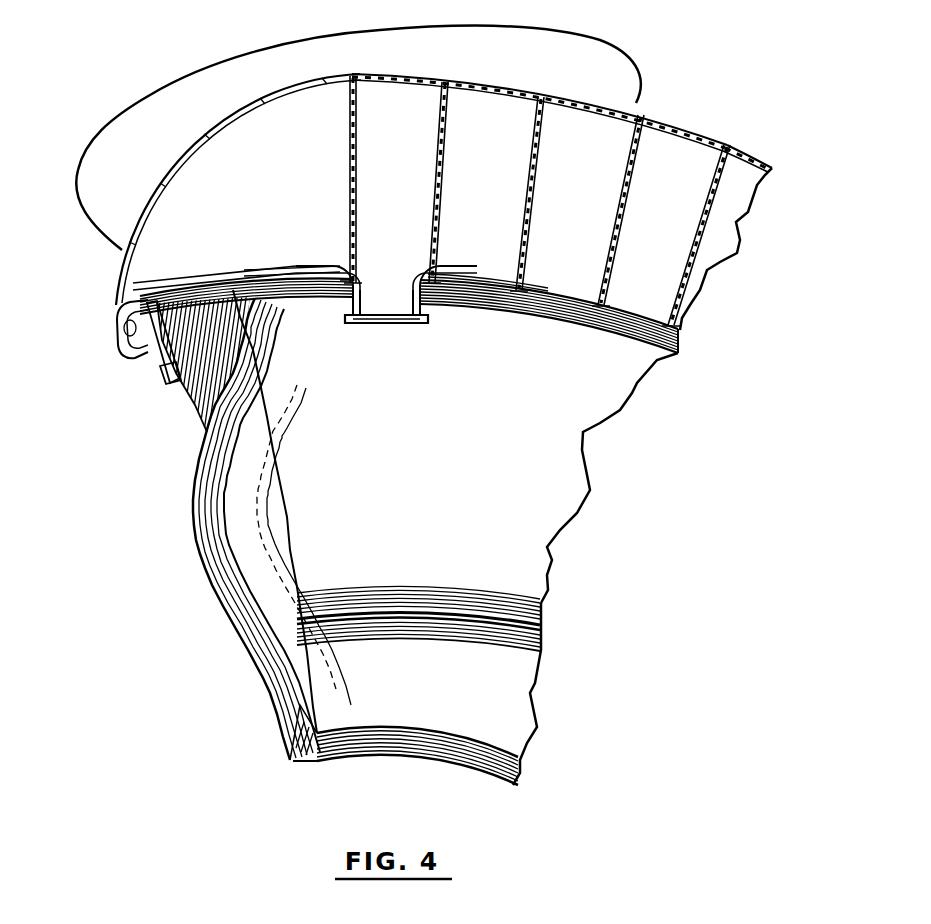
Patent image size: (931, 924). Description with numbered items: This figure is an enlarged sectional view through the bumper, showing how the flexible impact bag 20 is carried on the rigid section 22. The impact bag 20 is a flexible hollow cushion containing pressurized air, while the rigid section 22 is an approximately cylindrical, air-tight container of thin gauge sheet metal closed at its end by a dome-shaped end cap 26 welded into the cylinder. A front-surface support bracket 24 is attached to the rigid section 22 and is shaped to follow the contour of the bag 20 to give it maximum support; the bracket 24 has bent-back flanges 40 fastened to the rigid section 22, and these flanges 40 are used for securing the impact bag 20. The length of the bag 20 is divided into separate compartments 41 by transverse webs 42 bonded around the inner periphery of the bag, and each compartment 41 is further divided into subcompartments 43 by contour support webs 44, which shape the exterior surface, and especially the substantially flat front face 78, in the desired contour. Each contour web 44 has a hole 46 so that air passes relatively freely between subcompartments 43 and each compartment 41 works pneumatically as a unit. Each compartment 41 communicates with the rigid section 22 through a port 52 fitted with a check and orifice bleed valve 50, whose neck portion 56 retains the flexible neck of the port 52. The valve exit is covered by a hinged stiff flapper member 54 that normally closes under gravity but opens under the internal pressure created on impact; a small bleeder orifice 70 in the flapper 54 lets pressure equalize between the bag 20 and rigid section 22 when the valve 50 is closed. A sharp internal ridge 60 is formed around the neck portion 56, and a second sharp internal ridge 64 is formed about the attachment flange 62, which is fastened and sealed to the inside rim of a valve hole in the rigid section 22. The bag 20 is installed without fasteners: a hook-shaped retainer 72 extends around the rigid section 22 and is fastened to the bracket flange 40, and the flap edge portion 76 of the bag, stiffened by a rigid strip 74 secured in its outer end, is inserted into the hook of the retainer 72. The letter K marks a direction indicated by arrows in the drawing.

The impact bag 20 is at (210, 165).
The rigid section 22 is at (680, 340).
The front-surface support bracket 24 is at (250, 270).
The dome-shaped end cap 26 is at (197, 540).
The bent-back flange 40 is at (180, 378).
The compartment 41 is at (425, 26).
The transverse web 42 is at (626, 136).
The subcompartment 43 is at (558, 100).
The contour support web 44 is at (349, 126).
The hole 46 is at (350, 191).
The check and orifice bleed valve 50 is at (352, 312).
The port 52 is at (360, 283).
The flapper member 54 is at (364, 325).
The neck portion 56 is at (427, 312).
The sharp internal ridge 60 is at (368, 305).
The attachment flange 62 is at (492, 305).
The second sharp internal ridge 64 is at (345, 277).
The bleeder orifice 70 is at (400, 325).
The hook-shaped retainer 72 is at (165, 378).
The rigid strip 74 is at (152, 355).
The flap edge portion 76 is at (128, 347).
The flat front face 78 is at (582, 96).
The direction K is at (684, 127).